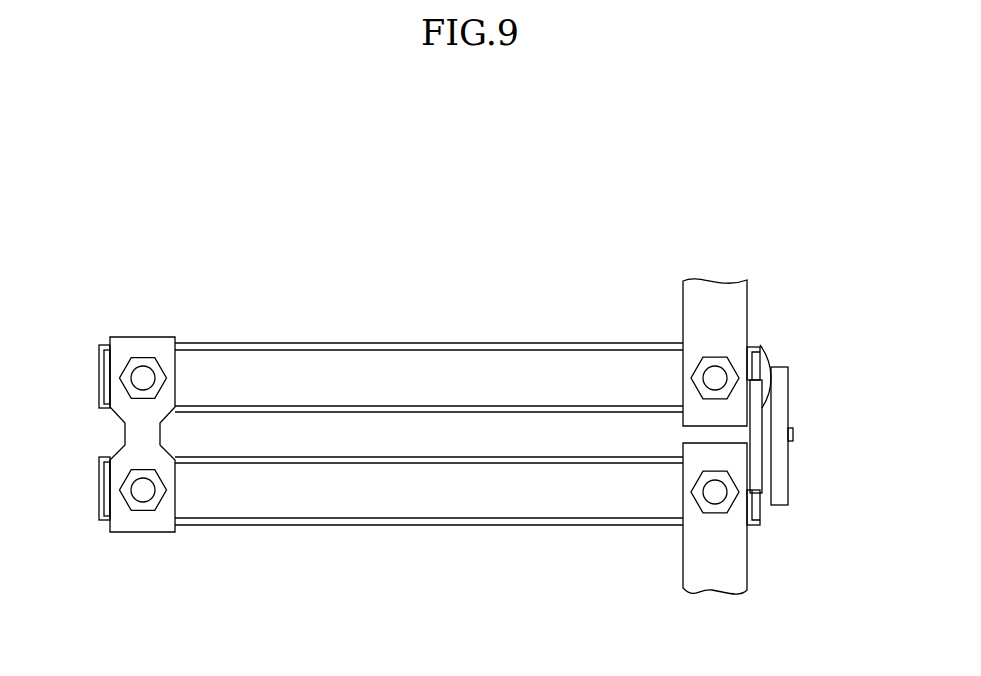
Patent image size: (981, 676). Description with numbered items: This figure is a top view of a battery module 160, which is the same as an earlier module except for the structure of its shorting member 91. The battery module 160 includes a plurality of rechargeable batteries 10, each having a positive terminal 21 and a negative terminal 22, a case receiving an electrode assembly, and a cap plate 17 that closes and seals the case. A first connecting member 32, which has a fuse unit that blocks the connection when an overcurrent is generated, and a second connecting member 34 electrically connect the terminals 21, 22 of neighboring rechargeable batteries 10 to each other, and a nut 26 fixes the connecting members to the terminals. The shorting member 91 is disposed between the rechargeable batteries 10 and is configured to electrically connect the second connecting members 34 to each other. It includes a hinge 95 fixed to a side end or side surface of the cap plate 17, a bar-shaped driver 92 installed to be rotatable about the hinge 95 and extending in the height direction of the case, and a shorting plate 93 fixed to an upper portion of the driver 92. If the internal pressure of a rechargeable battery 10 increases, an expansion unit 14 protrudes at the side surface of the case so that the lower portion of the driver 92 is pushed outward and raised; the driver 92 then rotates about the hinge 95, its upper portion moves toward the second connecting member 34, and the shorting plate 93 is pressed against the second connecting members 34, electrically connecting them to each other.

The battery module 160 is at (555, 183).
The rechargeable battery 10 is at (328, 326).
The cap plate 17 is at (448, 367).
The first connecting member 32 is at (146, 347).
The negative terminal 22 is at (133, 382).
The positive terminal 21 is at (133, 493).
The nut 26 is at (143, 507).
The second connecting member 34 is at (704, 300).
The expansion unit 14 is at (760, 353).
The shorting member 91 is at (808, 375).
The driver 92 is at (782, 404).
The shorting plate 93 is at (753, 478).
The hinge 95 is at (793, 433).